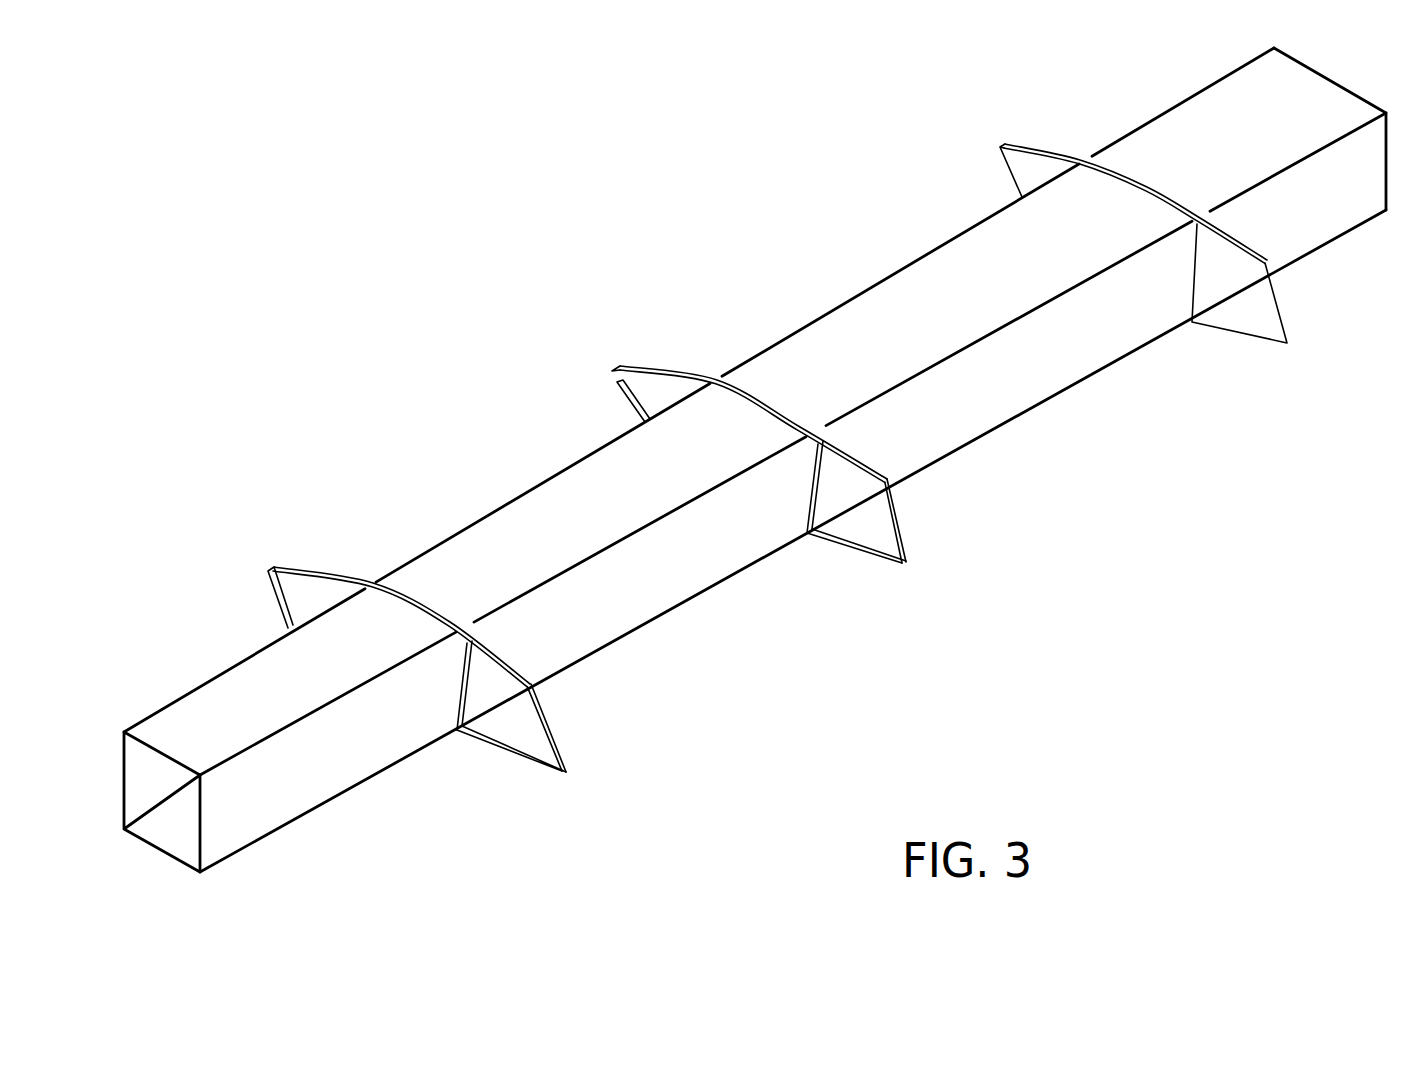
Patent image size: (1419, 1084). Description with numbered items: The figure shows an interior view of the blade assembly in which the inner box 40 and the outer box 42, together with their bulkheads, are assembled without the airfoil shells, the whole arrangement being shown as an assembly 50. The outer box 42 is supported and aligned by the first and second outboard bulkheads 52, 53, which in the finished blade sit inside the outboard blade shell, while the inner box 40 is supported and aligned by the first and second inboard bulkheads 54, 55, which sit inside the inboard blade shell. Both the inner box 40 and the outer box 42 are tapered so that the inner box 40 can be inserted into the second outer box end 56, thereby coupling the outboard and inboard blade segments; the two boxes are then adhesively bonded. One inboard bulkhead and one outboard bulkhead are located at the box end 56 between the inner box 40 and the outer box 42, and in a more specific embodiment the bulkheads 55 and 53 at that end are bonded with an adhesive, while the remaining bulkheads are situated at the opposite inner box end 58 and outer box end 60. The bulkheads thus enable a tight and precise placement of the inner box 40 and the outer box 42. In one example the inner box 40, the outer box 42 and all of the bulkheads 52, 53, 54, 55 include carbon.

The inner box 40 is at (1058, 387).
The outer box 42 is at (515, 508).
The fin assembly 50 is at (171, 128).
The first outboard bulkhead 52 is at (518, 727).
The second outboard bulkhead 53 is at (855, 520).
The first inboard bulkhead 54 is at (1253, 312).
The second inboard bulkhead 55 is at (627, 365).
The second outer box end 56 is at (913, 592).
The inner box end 58 is at (1348, 269).
The first outer box end 60 is at (211, 912).